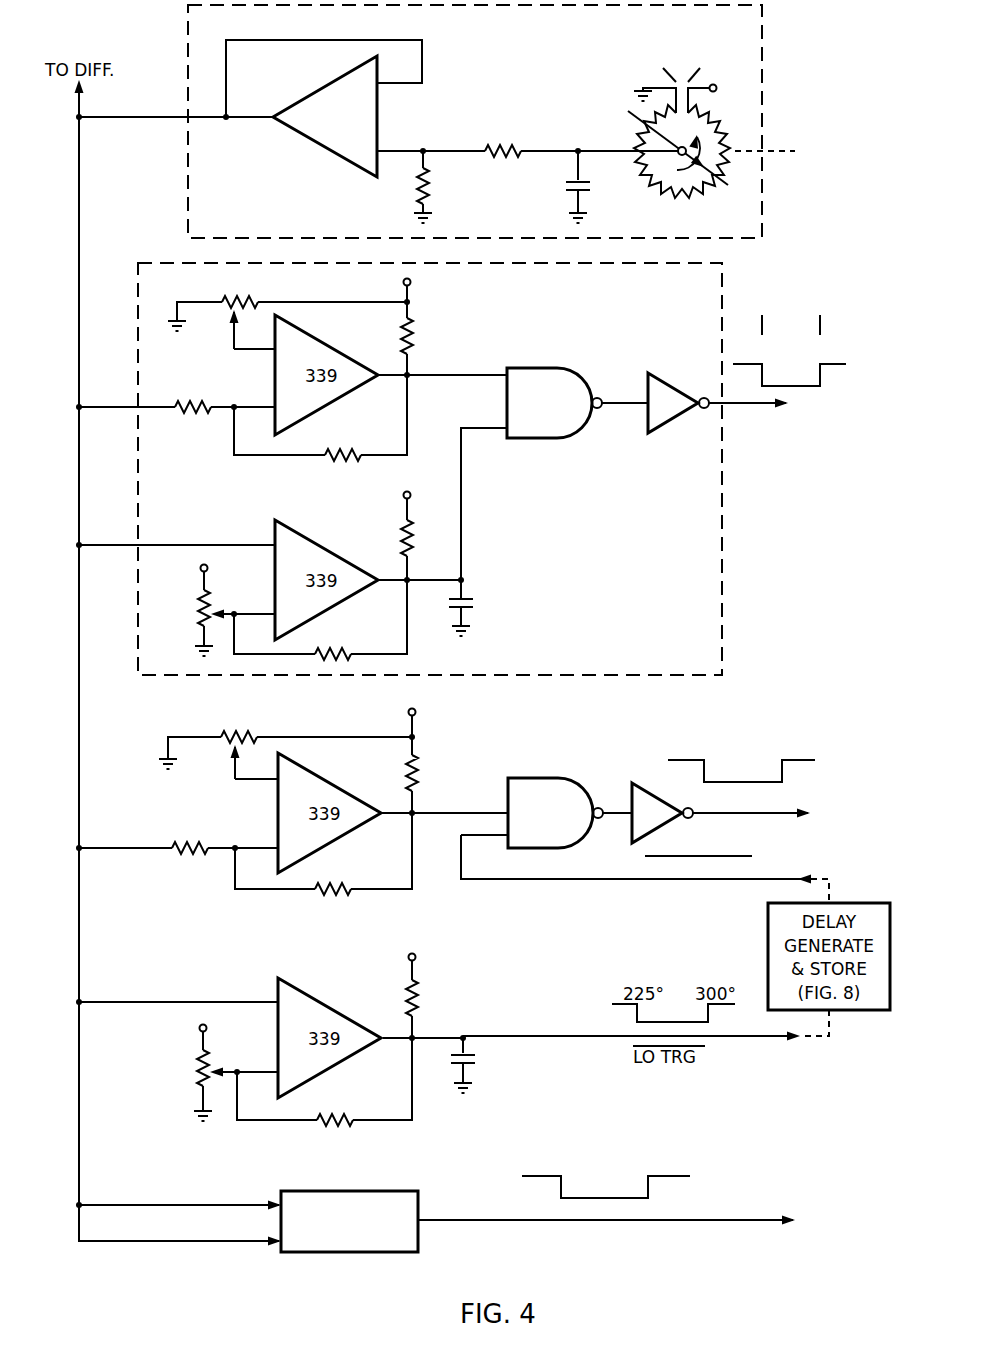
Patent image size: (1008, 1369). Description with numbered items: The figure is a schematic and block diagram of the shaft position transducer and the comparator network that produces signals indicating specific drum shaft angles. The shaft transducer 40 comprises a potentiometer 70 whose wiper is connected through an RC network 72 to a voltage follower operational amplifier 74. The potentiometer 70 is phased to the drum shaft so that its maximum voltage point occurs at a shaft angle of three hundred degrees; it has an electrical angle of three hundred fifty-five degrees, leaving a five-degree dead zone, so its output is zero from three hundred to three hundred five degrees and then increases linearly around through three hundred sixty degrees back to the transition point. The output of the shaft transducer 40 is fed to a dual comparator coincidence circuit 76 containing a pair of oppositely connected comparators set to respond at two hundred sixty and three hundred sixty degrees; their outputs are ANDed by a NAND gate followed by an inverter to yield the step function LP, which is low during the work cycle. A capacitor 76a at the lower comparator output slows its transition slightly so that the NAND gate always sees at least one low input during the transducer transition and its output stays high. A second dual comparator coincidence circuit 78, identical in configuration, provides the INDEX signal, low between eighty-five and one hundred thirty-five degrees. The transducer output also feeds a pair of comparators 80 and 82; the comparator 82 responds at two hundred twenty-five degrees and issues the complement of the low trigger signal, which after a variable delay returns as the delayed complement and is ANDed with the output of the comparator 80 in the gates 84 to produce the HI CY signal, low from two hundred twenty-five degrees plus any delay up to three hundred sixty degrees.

The shaft transducer 40 is at (494, 121).
The potentiometer 70 is at (699, 203).
The RC network 72 is at (548, 126).
The voltage follower operational amplifier 74 is at (312, 160).
The dual comparator coincidence circuit 76 is at (462, 469).
The capacitor 76a is at (470, 598).
The dual comparator coincidence circuit 78 is at (362, 1253).
The comparator 80 is at (226, 882).
The comparator 82 is at (343, 992).
The gates 84 is at (591, 763).